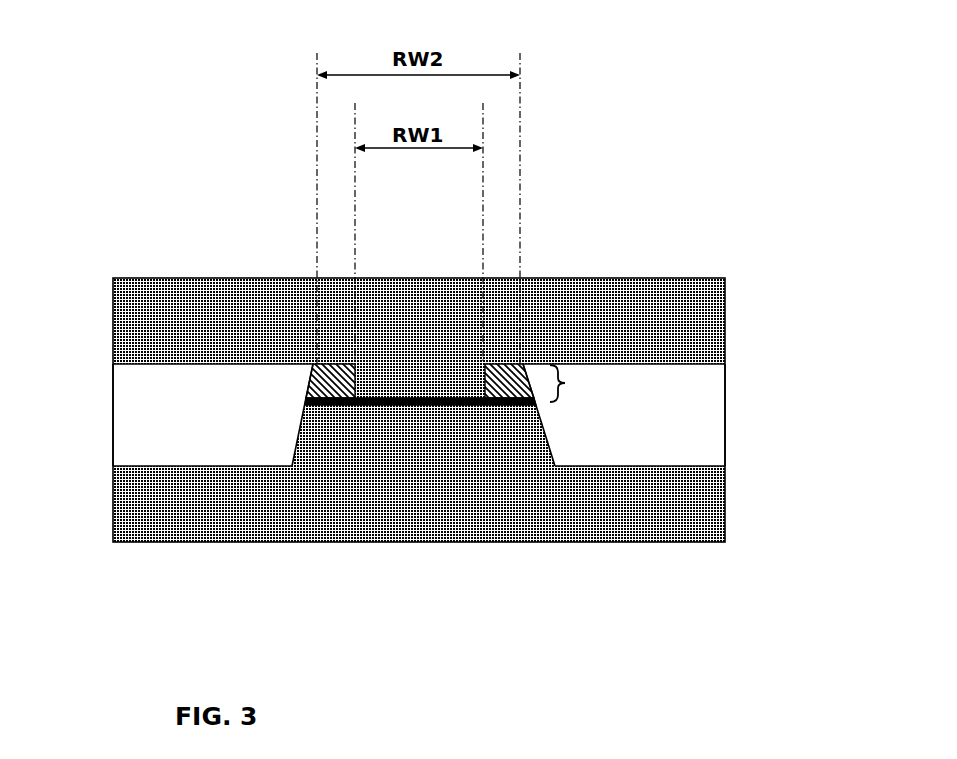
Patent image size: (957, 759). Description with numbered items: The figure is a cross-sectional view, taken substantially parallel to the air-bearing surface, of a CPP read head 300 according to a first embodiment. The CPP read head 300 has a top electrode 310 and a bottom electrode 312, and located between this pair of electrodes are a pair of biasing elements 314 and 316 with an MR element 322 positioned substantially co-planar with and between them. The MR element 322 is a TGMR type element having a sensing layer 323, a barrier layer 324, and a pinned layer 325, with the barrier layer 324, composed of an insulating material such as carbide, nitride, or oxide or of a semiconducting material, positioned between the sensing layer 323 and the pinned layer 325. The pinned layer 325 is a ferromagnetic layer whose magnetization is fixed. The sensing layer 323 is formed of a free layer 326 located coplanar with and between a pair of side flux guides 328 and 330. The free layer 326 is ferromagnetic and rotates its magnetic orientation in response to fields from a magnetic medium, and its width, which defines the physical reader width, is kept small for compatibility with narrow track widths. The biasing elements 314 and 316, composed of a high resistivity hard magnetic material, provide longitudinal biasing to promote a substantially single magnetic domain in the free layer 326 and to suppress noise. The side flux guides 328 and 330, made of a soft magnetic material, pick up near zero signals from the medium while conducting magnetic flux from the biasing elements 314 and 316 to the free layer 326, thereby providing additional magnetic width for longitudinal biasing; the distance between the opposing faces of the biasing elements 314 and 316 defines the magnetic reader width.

The CPP read head 300 is at (131, 216).
The top electrode 310 is at (622, 316).
The bottom electrode 312 is at (567, 475).
The biasing element 314 is at (698, 419).
The biasing element 316 is at (165, 425).
The MR element 322 is at (558, 436).
The sensing layer 323 is at (583, 383).
The barrier layer 324 is at (400, 405).
The pinned layer 325 is at (462, 438).
The free layer 326 is at (418, 382).
The side flux guide 328 is at (333, 376).
The side flux guide 330 is at (519, 370).